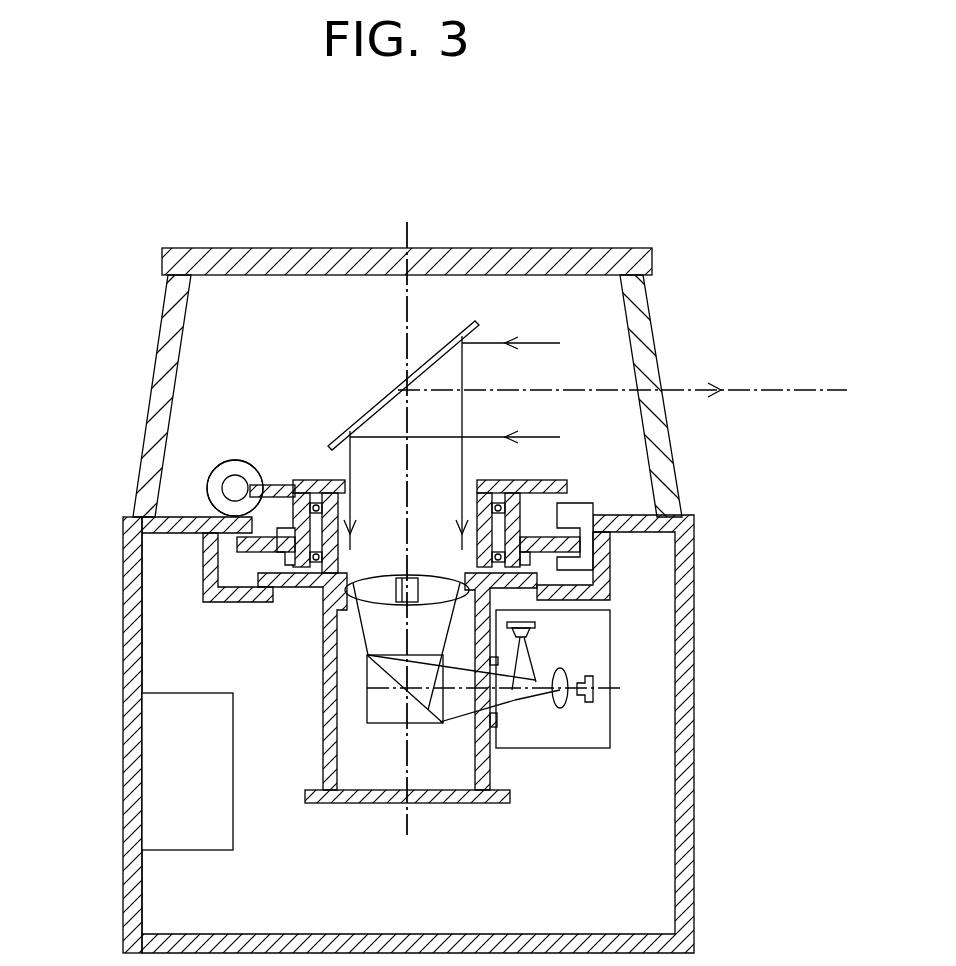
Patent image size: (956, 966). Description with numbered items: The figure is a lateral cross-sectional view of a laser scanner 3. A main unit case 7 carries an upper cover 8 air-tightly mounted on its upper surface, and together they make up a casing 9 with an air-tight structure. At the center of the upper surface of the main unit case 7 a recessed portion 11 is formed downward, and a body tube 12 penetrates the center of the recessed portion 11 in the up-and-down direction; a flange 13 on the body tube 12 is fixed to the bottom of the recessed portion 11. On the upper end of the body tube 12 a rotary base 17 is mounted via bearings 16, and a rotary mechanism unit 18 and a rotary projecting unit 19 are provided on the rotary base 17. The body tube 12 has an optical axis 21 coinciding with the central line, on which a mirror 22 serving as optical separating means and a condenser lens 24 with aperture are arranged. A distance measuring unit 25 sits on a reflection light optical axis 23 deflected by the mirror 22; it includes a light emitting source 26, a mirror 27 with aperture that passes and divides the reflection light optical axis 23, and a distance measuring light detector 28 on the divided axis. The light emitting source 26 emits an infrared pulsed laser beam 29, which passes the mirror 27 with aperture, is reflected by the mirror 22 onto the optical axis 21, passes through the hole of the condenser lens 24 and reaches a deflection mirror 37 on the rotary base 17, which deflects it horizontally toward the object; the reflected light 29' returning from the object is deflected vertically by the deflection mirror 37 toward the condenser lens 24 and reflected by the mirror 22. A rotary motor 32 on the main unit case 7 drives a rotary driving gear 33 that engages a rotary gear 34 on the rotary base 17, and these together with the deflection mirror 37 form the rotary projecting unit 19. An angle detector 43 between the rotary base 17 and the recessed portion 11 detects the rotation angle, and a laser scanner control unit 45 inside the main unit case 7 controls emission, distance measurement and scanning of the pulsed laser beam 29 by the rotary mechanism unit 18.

The laser scanner 3 is at (418, 173).
The main unit case 7 is at (122, 712).
The upper cover 8 is at (553, 247).
The casing 9 is at (120, 608).
The recessed portion 11 is at (233, 603).
The body tube 12 is at (323, 687).
The flange 13 is at (277, 578).
The bearings 16 is at (502, 492).
The rotary base 17 is at (523, 507).
The rotary mechanism unit 18 is at (237, 442).
The rotary projecting unit 19 is at (330, 412).
The optical axis 21 is at (789, 389).
The mirror 22 is at (395, 654).
The reflection light optical axis 23 is at (551, 717).
The condenser lens with aperture 24 is at (388, 573).
The distance measuring unit 25 is at (612, 652).
The light emitting source 26 is at (593, 693).
The mirror with aperture 27 is at (517, 698).
The distance measuring light detector 28 is at (532, 622).
The pulsed laser beam 29 is at (622, 331).
The reflected light 29' is at (472, 481).
The rotary motor 32 is at (212, 467).
The rotary driving gear 33 is at (222, 488).
The rotary gear 34 is at (262, 481).
The deflection mirror 37 is at (393, 395).
The angle detector 43 is at (597, 489).
The laser scanner control unit 45 is at (188, 693).